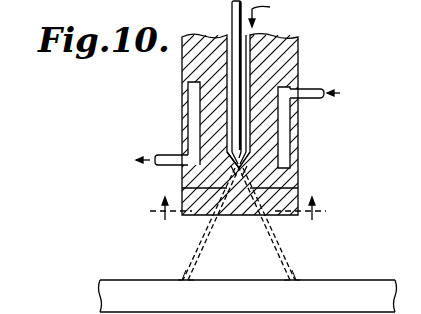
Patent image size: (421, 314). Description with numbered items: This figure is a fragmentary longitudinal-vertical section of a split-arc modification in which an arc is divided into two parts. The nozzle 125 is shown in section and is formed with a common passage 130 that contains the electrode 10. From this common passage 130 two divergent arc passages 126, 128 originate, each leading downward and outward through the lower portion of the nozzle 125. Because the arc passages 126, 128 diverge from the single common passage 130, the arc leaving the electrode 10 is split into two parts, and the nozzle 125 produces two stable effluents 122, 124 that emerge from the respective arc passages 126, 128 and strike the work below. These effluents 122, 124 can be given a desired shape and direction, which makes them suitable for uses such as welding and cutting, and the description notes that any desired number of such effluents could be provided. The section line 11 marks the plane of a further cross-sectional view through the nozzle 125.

The electrode 10 is at (232, 15).
The section line 11- 11 is at (239, 220).
The effluent 122 is at (201, 259).
The effluent 124 is at (292, 259).
The nozzle 125 is at (298, 52).
The arc passage 126 is at (217, 189).
The arc passage 128 is at (298, 188).
The common passage 130 is at (228, 77).